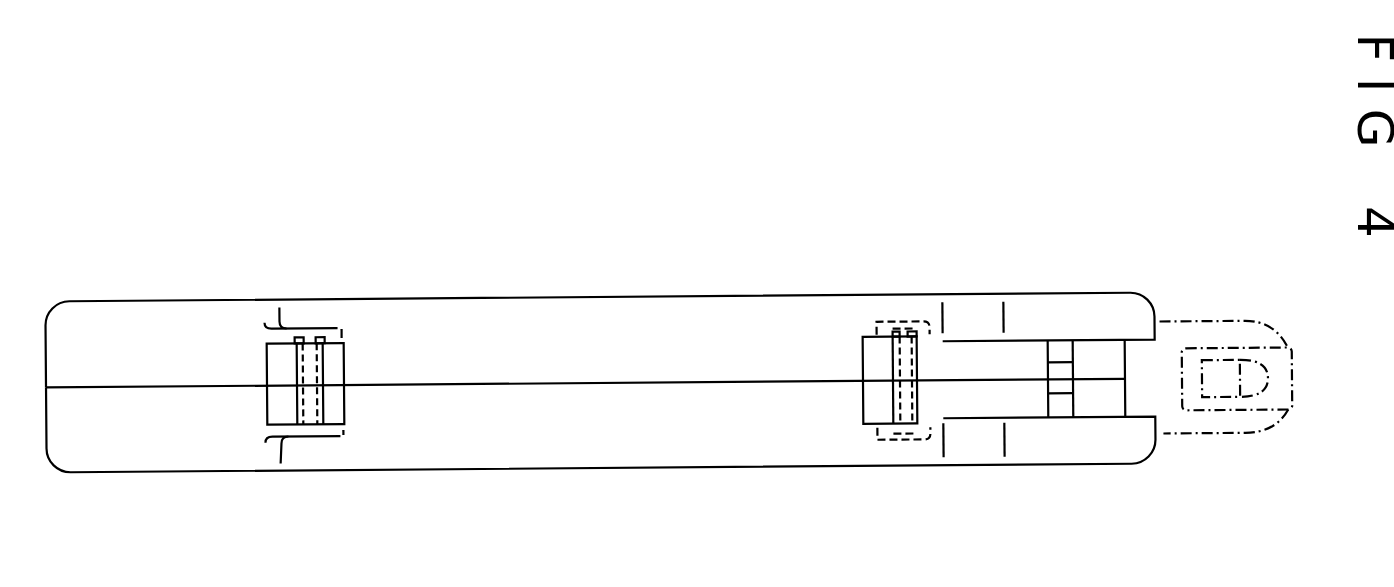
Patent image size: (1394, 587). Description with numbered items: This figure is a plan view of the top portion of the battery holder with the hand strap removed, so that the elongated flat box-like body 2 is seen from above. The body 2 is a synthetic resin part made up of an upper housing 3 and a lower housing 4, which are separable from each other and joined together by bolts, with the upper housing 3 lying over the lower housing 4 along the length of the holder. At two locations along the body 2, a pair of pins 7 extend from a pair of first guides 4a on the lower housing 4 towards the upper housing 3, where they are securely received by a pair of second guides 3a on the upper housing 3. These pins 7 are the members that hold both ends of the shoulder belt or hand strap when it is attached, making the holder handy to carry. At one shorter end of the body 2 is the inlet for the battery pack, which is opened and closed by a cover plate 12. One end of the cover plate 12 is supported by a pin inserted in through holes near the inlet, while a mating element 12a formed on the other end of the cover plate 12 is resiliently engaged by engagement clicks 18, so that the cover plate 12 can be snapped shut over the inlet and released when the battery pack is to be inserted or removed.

The body 2 is at (688, 297).
The upper housing 3 is at (523, 305).
The lower housing 4 is at (518, 453).
The second guides 3a is at (327, 330).
The first guides 4a is at (322, 424).
The pins 7 is at (317, 356).
The engagement clicks 18 is at (1063, 368).
The cover plate 12 is at (1211, 327).
The mating element 12a is at (1213, 404).